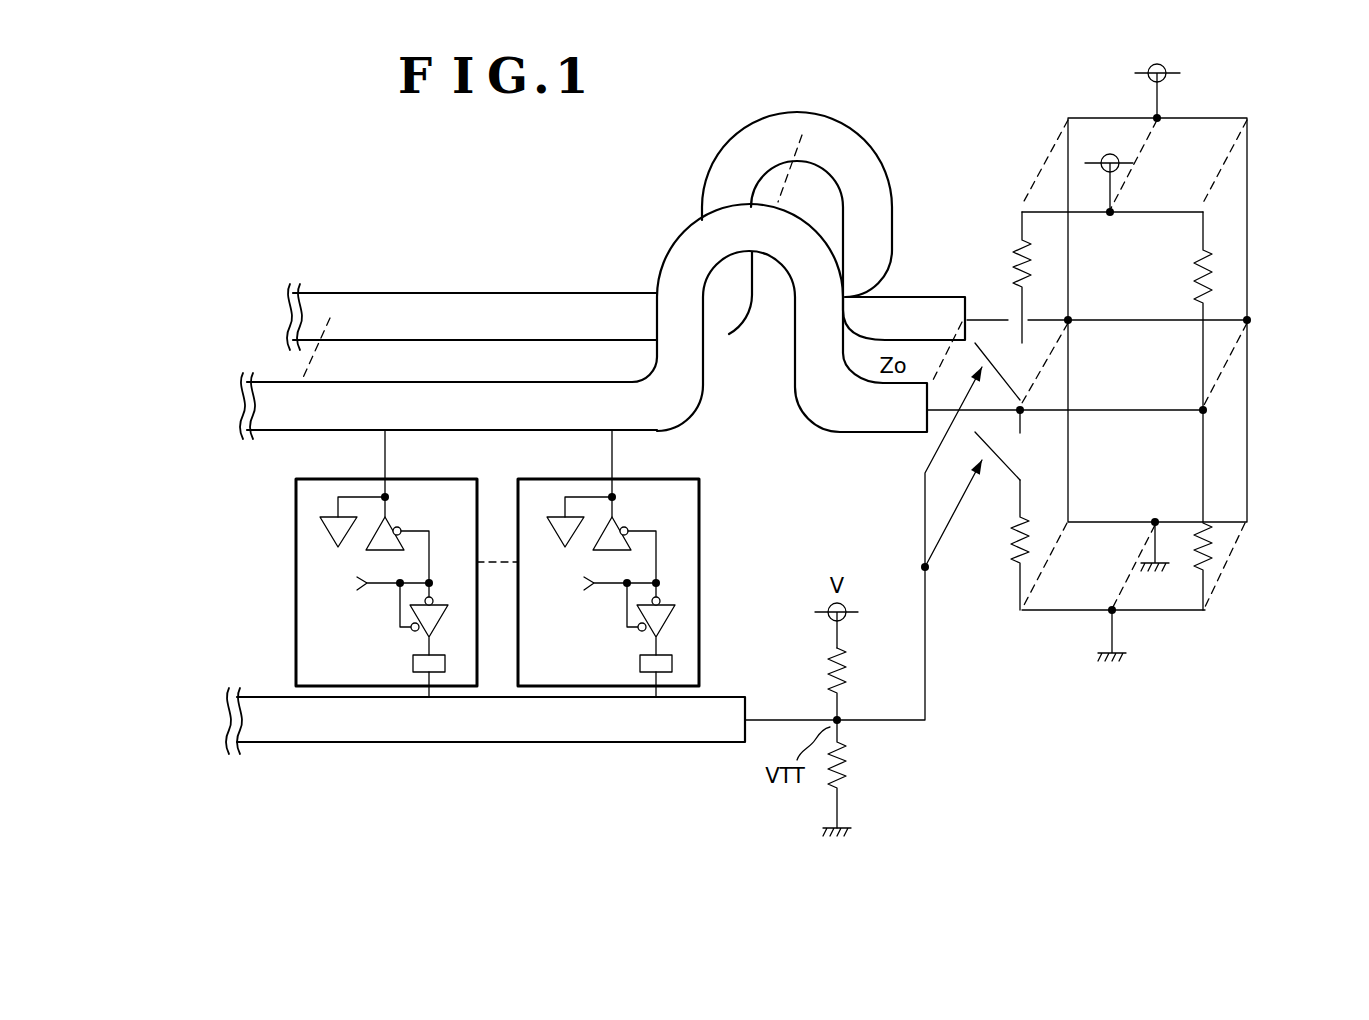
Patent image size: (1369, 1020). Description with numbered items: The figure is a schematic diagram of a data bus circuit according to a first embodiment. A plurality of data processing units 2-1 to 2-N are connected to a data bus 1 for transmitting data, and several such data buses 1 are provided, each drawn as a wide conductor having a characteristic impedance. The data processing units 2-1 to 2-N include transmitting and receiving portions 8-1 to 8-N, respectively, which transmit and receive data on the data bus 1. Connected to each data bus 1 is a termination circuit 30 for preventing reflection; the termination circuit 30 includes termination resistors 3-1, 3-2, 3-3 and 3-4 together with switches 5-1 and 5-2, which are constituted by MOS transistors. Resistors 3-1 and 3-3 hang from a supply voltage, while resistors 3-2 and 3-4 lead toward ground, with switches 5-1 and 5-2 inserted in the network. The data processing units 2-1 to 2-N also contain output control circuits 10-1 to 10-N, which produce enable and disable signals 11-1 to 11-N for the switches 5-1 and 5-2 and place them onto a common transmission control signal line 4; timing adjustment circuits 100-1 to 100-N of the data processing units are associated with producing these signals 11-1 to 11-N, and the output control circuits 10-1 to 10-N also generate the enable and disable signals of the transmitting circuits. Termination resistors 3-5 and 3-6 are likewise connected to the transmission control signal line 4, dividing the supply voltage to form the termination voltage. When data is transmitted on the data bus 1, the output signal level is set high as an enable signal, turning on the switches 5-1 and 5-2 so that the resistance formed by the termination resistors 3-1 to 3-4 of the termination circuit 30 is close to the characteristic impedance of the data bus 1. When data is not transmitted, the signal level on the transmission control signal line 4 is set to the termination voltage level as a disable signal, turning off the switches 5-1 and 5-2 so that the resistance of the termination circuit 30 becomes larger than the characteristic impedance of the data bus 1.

The data bus 1 is at (432, 293).
The data processing unit 2-1 is at (383, 563).
The data processing unit 2-N is at (654, 563).
The transmitting and receiving portion 8-1 is at (400, 529).
The transmitting and receiving portion 8-N is at (624, 529).
The output control circuit 10-1 is at (410, 629).
The output control circuit 10-N is at (668, 623).
The enable and disable signal 11-1 is at (443, 573).
The enable and disable signal 11-N is at (614, 586).
The timing adjustment circuit 100-1 is at (413, 665).
The timing adjustment circuit 100-N is at (673, 665).
The transmission control signal line 4 is at (425, 742).
The termination resistor 3-1 is at (1007, 263).
The termination resistor 3-2 is at (1010, 560).
The termination resistor 3-3 is at (1217, 250).
The termination resistor 3-4 is at (1210, 563).
The termination resistor 3-5 is at (842, 687).
The termination resistor 3-6 is at (847, 785).
The switch 5-1 is at (1007, 373).
The switch 5-2 is at (1010, 463).
The termination circuit 30 is at (1141, 350).